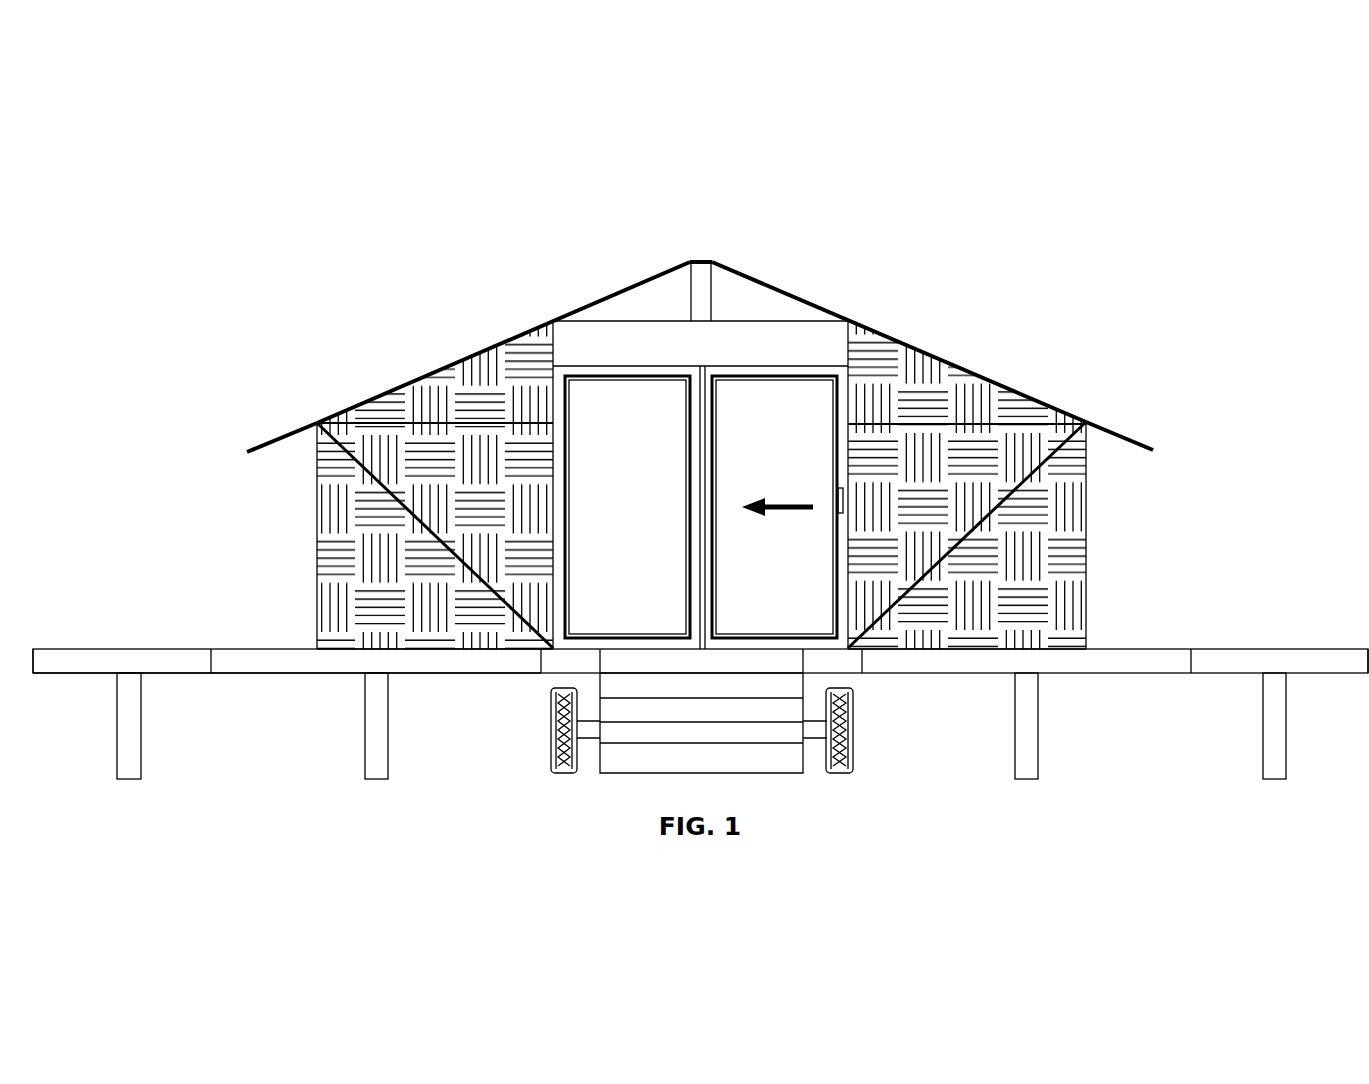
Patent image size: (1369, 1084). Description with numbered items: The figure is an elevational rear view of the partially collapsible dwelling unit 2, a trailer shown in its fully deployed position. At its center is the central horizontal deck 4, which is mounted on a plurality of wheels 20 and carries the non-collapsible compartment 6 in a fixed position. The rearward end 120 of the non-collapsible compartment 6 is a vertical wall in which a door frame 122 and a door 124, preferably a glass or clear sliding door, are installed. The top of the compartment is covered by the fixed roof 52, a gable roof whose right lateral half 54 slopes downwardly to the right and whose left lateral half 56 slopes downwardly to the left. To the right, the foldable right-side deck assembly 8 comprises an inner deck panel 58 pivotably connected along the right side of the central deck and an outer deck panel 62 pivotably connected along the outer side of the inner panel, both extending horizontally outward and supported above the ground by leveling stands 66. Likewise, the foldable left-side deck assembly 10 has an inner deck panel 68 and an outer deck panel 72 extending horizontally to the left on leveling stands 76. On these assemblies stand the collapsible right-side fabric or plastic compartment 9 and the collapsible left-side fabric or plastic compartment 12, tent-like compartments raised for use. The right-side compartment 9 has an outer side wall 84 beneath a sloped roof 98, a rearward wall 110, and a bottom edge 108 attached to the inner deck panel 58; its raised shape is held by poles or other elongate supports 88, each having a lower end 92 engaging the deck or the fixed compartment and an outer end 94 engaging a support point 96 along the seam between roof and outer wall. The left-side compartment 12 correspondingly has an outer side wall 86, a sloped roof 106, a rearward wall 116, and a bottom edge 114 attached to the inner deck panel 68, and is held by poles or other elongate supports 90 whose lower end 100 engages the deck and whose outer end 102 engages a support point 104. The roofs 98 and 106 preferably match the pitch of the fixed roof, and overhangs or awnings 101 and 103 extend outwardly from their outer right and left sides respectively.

The partially collapsible dwelling unit 2 is at (837, 226).
The central horizontal deck 4 is at (540, 676).
The non-collapsible compartment 6 is at (650, 350).
The foldable right-side deck assembly 8 is at (1130, 675).
The collapsible right-side fabric or plastic compartment 9 is at (1072, 558).
The foldable left-side deck assembly 10 is at (222, 648).
The collapsible left-side fabric or plastic compartment 12 is at (328, 497).
The wheels 20 is at (550, 748).
The fixed roof 52 is at (705, 258).
The right lateral half 54 is at (743, 273).
The left lateral half 56 is at (662, 274).
The inner deck panel 58 is at (1175, 648).
The outer deck panel 62 is at (1332, 648).
The leveling stands 66 is at (1039, 725).
The inner deck panel 68 is at (248, 675).
The outer deck panel 72 is at (70, 648).
The leveling stands 76 is at (116, 725).
The collapsible outer side wall 84 is at (1088, 520).
The collapsible outer side wall 86 is at (325, 557).
The poles or other elongate supports 88 is at (1040, 452).
The poles or other elongate supports 90 is at (358, 458).
The lower end 92 is at (832, 632).
The outer end 94 is at (999, 394).
The support point 96 is at (1086, 420).
The sloped roof 98 is at (930, 367).
The lower end 100 is at (568, 632).
The overhang or awning 101 is at (1150, 452).
The outer end 102 is at (393, 394).
The support point 104 is at (318, 418).
The overhang or awning 103 is at (250, 452).
The sloped roof 106 is at (460, 366).
The bottom edge 108 is at (958, 675).
The rearward wall 110 is at (1035, 603).
The bottom edge 114 is at (457, 675).
The rearward wall 116 is at (357, 603).
The rearward end 120 is at (826, 340).
The door frame 122 is at (843, 425).
The door 124 is at (598, 400).